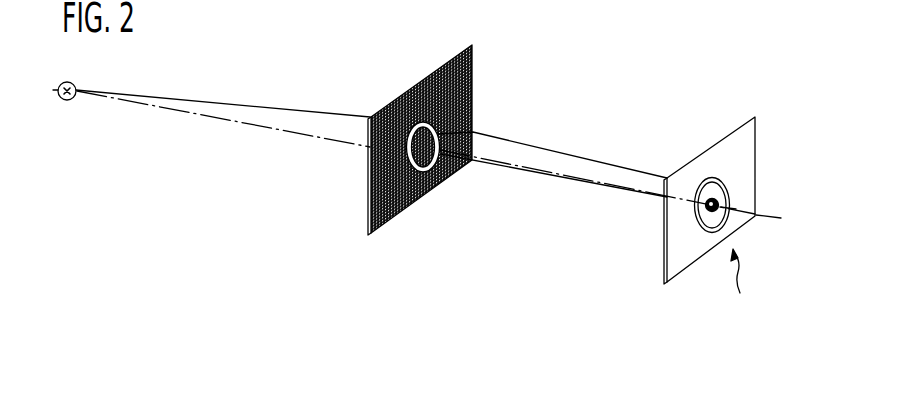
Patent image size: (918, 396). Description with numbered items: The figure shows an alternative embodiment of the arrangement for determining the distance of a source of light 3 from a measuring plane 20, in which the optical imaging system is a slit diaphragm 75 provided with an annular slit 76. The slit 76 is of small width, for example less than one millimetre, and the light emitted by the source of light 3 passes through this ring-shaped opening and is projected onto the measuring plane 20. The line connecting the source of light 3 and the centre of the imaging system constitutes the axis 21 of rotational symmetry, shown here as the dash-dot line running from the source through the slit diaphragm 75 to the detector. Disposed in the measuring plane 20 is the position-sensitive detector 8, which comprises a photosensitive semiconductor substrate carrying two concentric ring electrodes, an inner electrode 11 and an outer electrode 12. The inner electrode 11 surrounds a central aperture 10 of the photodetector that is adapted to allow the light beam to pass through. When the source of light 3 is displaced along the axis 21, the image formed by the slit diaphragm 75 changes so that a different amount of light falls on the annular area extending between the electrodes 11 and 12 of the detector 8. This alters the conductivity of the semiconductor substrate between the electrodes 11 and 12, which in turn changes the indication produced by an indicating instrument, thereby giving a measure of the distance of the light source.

The source of light 3 is at (62, 100).
The slit diaphragm 75 is at (385, 215).
The annular slit 76 is at (441, 134).
The measuring plane 20 is at (757, 138).
The outer electrode 12 is at (728, 187).
The inner electrode 11 is at (736, 209).
The central aperture 10 is at (713, 215).
The axis of rotational symmetry 21 is at (770, 220).
The position-sensitive detector 8 is at (737, 287).